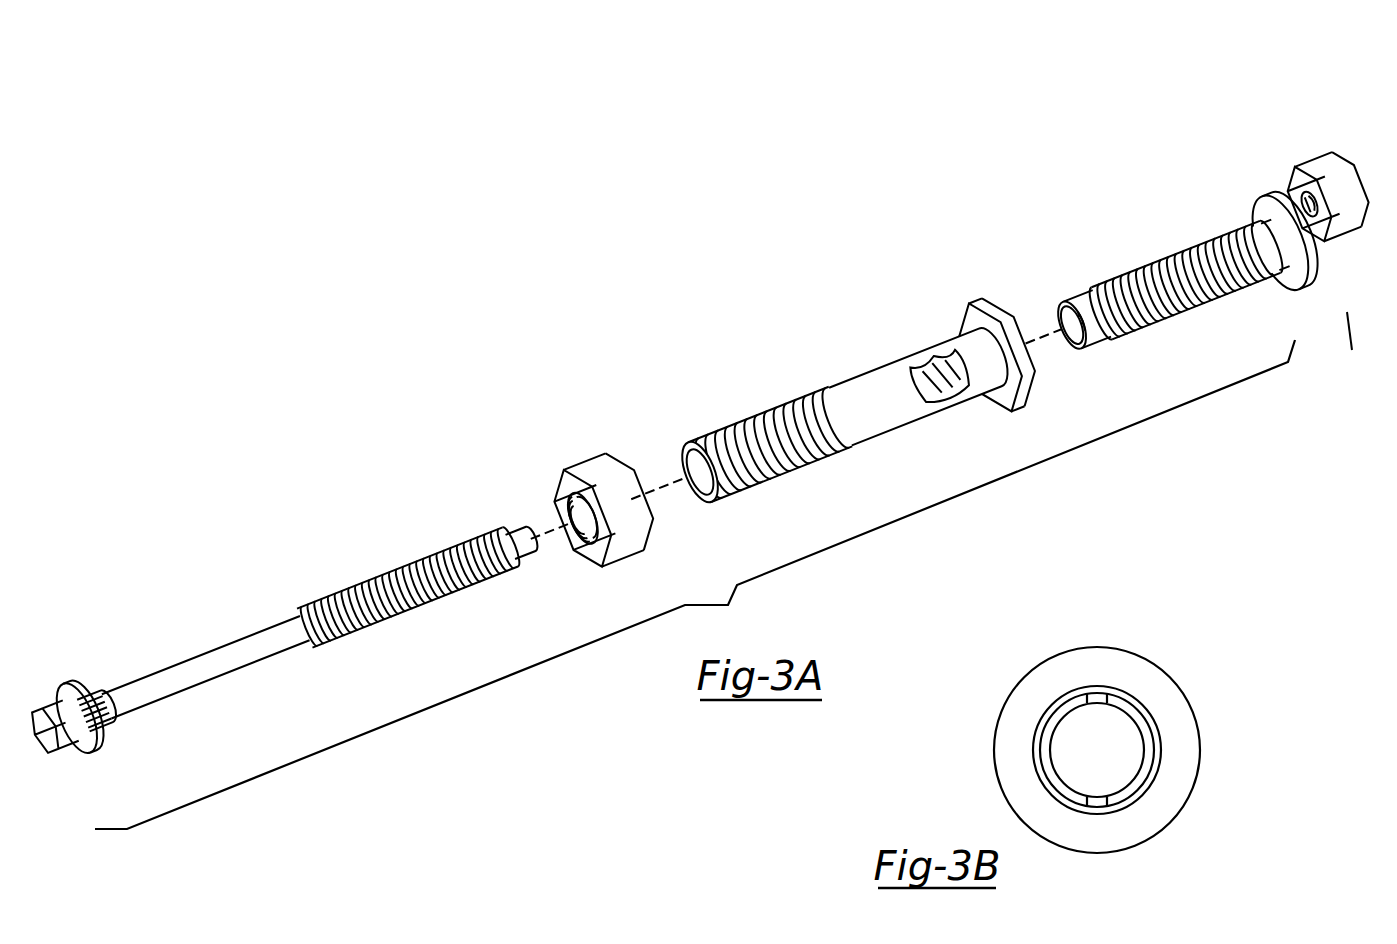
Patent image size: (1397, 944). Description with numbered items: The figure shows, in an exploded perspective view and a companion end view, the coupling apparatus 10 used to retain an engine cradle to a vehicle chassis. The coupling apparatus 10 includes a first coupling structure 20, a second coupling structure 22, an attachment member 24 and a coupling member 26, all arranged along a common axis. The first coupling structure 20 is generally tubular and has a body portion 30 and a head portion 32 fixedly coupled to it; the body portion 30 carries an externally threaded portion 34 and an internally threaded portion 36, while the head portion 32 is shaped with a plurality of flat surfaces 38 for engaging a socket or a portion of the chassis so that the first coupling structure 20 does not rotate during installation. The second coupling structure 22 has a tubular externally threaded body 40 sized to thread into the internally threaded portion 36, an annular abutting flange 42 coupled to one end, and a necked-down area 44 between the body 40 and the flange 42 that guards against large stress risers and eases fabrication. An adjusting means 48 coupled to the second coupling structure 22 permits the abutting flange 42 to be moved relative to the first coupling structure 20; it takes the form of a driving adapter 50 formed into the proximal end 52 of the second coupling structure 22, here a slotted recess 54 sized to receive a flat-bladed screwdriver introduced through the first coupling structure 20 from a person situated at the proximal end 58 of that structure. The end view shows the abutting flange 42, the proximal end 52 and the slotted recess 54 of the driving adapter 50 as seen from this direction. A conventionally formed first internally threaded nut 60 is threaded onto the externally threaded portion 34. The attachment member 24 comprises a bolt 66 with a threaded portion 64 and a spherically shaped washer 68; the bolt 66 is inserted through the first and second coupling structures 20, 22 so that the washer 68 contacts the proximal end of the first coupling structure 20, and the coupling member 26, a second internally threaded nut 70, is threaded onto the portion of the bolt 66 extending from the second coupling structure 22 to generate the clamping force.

In FIG. 3A, the coupling apparatus 10 is at (296, 376).
In FIG. 3A, the first coupling structure 20 is at (856, 328).
In FIG. 3A, the second coupling structure 22 is at (1150, 204).
In FIG. 3B, the second coupling structure 22 is at (1202, 790).
In FIG. 3A, the attachment member 24 is at (333, 566).
In FIG. 3A, the coupling member 26 is at (1340, 256).
In FIG. 3A, the body portion 30 is at (903, 427).
In FIG. 3A, the head portion 32 is at (1025, 388).
In FIG. 3A, the externally threaded portion 34 is at (775, 470).
In FIG. 3A, the internally threaded portion 36 is at (940, 360).
In FIG. 3A, the flat surfaces 38 is at (990, 316).
In FIG. 3A, the externally threaded body 40 is at (1175, 300).
In FIG. 3A, the abutting flange 42 is at (1267, 203).
In FIG. 3B, the abutting flange 42 is at (1012, 743).
In FIG. 3A, the necked-down area 44 is at (1280, 253).
In FIG. 3A, the adjusting means 48 is at (1088, 310).
In FIG. 3B, the adjusting means 48 is at (1135, 677).
In FIG. 3A, the driving adapter 50 is at (1060, 326).
In FIG. 3B, the driving adapter 50 is at (1076, 688).
In FIG. 3A, the proximal end 52 is at (1100, 318).
In FIG. 3B, the proximal end 52 is at (1137, 717).
In FIG. 3B, the slotted recess 54 is at (1098, 697).
In FIG. 3A, the proximal end 58 is at (715, 411).
In FIG. 3A, the first internally threaded nut 60 is at (582, 465).
In FIG. 3A, the threaded portion 64 is at (416, 594).
In FIG. 3A, the bolt 66 is at (246, 655).
In FIG. 3A, the spherically shaped washer 68 is at (92, 640).
In FIG. 3A, the second internally threaded nut 70 is at (1350, 160).